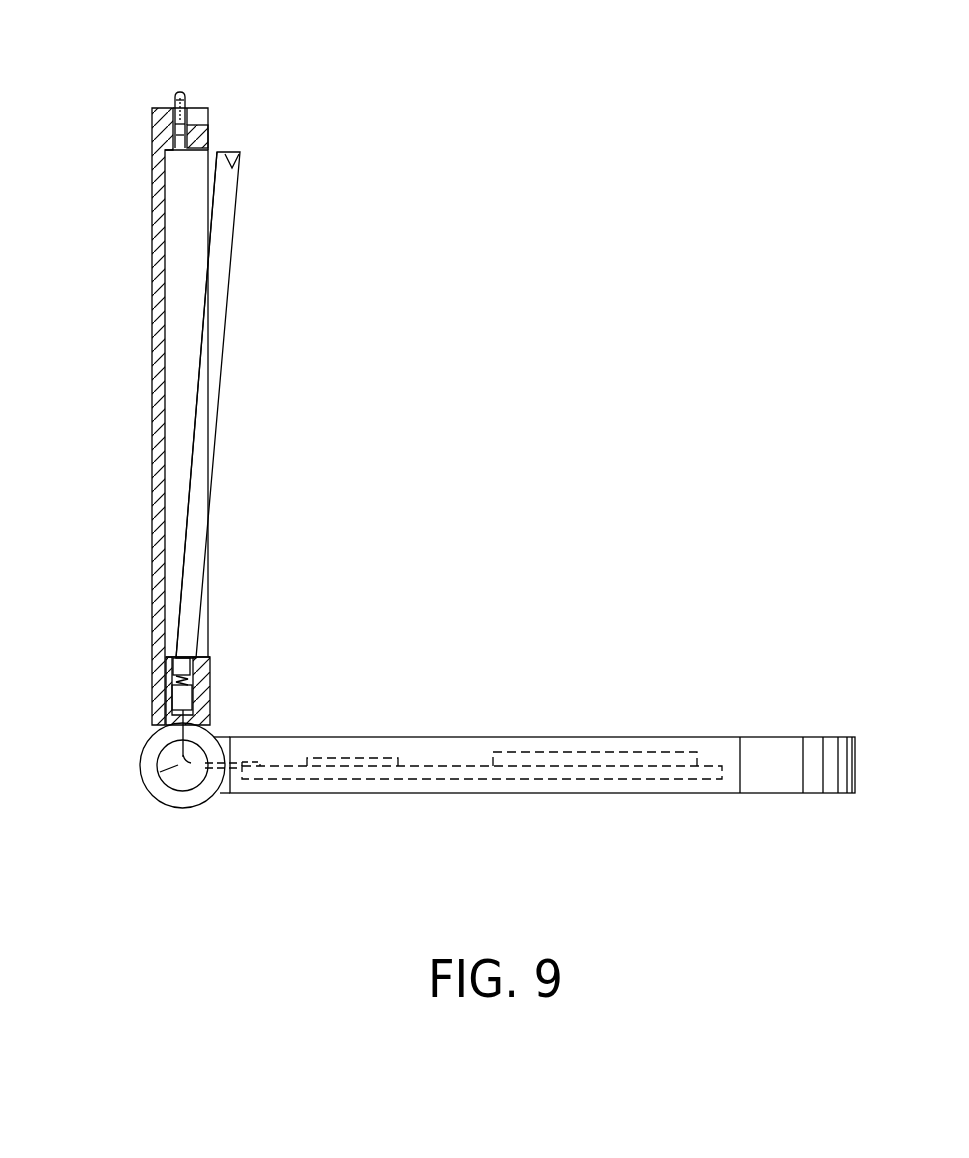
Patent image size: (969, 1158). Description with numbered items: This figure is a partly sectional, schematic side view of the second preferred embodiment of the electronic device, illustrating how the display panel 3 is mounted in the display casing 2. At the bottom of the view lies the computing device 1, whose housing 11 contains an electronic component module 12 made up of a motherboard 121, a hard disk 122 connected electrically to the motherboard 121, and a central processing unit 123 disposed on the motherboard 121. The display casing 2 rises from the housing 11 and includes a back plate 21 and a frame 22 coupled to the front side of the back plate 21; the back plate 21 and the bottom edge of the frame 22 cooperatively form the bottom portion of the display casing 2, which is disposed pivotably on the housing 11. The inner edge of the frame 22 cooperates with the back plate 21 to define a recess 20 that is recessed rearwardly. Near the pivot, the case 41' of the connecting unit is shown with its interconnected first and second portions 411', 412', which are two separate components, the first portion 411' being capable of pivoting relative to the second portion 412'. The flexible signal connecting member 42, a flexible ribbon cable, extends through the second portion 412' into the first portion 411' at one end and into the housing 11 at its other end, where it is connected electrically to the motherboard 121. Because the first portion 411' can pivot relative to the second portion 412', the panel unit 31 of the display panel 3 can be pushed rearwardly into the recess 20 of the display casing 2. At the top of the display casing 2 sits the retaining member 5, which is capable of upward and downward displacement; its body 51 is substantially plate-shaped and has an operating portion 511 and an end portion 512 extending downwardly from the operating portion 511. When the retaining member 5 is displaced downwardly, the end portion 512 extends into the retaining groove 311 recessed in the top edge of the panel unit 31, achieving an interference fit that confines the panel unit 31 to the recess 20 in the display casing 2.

The computing device 1 is at (682, 710).
The housing 11 is at (717, 737).
The electronic component module 12 is at (530, 745).
The motherboard 121 is at (448, 772).
The hard disk 122 is at (595, 752).
The central processing unit 123 is at (357, 758).
The display casing 2 is at (148, 173).
The recess 20 is at (177, 267).
The back plate 21 is at (160, 213).
The frame 22 is at (205, 143).
The display panel 3 is at (235, 352).
The panel unit 31 is at (210, 448).
The retaining groove 311 is at (237, 178).
The retaining member 5 is at (177, 91).
The body 51 is at (187, 91).
The operating portion 511 is at (202, 98).
The end portion 512 is at (187, 130).
The case 41' is at (139, 627).
The first portion 411' is at (130, 652).
The second portion 412' is at (132, 717).
The flexible signal connecting member 42 is at (157, 773).